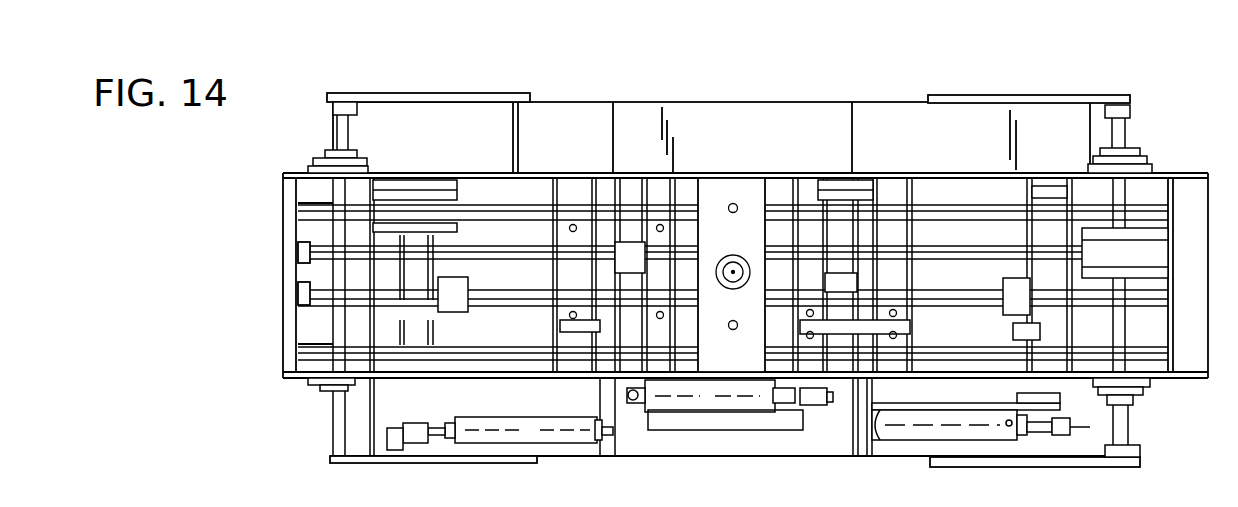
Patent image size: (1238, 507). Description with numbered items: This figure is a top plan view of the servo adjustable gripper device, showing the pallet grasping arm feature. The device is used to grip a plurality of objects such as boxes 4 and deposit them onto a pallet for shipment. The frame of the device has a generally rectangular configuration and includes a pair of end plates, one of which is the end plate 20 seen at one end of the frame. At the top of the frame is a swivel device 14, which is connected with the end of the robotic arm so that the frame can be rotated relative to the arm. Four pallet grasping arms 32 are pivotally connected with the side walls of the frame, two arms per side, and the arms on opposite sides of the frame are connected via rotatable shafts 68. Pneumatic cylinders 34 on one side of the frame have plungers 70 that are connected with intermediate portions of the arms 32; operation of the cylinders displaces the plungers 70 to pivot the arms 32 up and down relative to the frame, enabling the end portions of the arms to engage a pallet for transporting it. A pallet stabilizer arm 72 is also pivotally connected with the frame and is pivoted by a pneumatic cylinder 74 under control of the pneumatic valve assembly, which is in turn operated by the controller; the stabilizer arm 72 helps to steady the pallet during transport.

The box 4 is at (735, 130).
The swivel device 14 is at (743, 195).
The end plate 20 is at (292, 240).
The pallet grasping arm 32 is at (452, 93).
The pneumatic cylinder 34 is at (548, 432).
The rotatable shaft 68 is at (337, 134).
The plunger 70 is at (405, 447).
The pallet stabilizer arm 72 is at (712, 420).
The pneumatic cylinder 74 is at (730, 400).